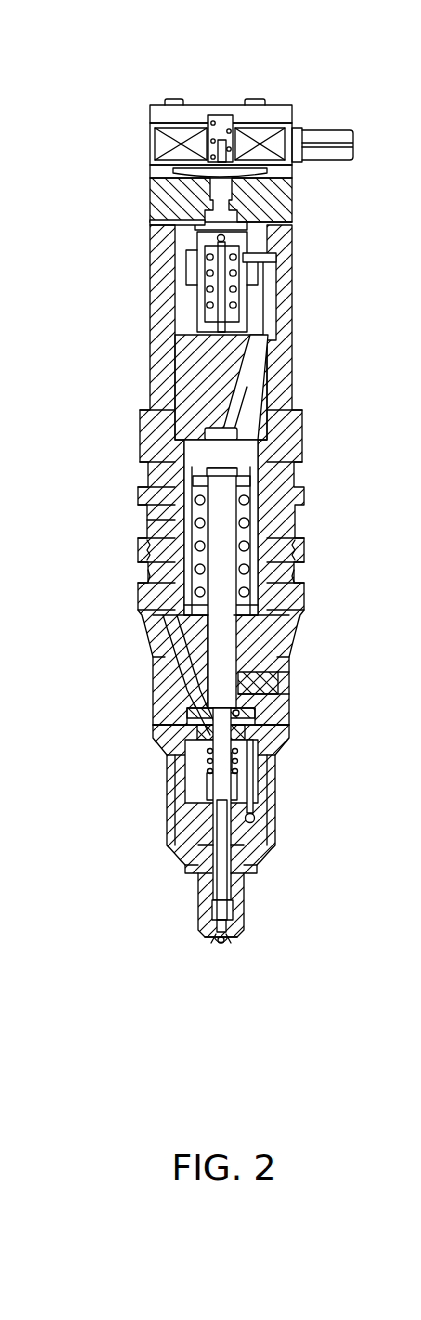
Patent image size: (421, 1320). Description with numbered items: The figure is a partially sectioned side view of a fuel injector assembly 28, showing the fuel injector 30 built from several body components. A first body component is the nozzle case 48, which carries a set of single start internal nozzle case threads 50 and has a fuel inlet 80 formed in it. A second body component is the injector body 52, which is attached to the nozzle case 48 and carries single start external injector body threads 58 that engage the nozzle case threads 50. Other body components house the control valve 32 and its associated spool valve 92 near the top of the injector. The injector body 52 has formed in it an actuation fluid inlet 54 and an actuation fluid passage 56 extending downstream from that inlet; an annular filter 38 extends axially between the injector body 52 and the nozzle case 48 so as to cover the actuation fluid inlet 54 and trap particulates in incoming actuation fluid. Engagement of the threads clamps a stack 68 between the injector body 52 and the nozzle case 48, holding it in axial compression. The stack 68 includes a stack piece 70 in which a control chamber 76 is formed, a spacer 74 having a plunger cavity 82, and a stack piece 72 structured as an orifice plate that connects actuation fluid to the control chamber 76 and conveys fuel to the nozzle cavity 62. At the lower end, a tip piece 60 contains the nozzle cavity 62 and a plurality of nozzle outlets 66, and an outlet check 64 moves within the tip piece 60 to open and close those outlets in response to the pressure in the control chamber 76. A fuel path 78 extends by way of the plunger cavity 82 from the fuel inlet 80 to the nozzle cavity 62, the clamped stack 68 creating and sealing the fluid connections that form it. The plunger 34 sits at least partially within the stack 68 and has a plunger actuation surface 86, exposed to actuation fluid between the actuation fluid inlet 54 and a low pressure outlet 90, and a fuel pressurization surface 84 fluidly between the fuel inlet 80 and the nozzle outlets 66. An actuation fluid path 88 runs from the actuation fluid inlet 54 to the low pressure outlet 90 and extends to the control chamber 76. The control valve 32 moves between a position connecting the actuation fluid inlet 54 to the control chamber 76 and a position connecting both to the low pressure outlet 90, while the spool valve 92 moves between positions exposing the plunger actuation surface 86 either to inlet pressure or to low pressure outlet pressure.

The fuel injector assembly 28 is at (108, 94).
The fuel injector 30 is at (157, 105).
The control valve 32 is at (250, 192).
The plunger 34 is at (232, 533).
The annular filter 38 is at (148, 518).
The nozzle case 48 is at (302, 587).
The nozzle case threads 50 is at (287, 611).
The injector body 52 is at (303, 440).
The actuation fluid inlet 54 is at (284, 547).
The actuation fluid passage 56 is at (278, 342).
The injector body threads 58 is at (165, 606).
The tip piece 60 is at (248, 903).
The nozzle cavity 62 is at (215, 876).
The outlet check 64 is at (228, 848).
The nozzle outlets 66 is at (228, 945).
The stack 68 is at (182, 824).
The stack piece 70 is at (182, 788).
The stack piece 72 is at (262, 752).
The spacer 74 is at (272, 666).
The control chamber 76 is at (187, 728).
The fuel path 78 is at (257, 812).
The fuel inlet 80 is at (287, 693).
The plunger cavity 82 is at (210, 680).
The fuel pressurization surface 84 is at (236, 718).
The plunger actuation surface 86 is at (228, 430).
The actuation fluid path 88 is at (287, 321).
The low pressure outlet 90 is at (150, 222).
The spool valve 92 is at (247, 258).